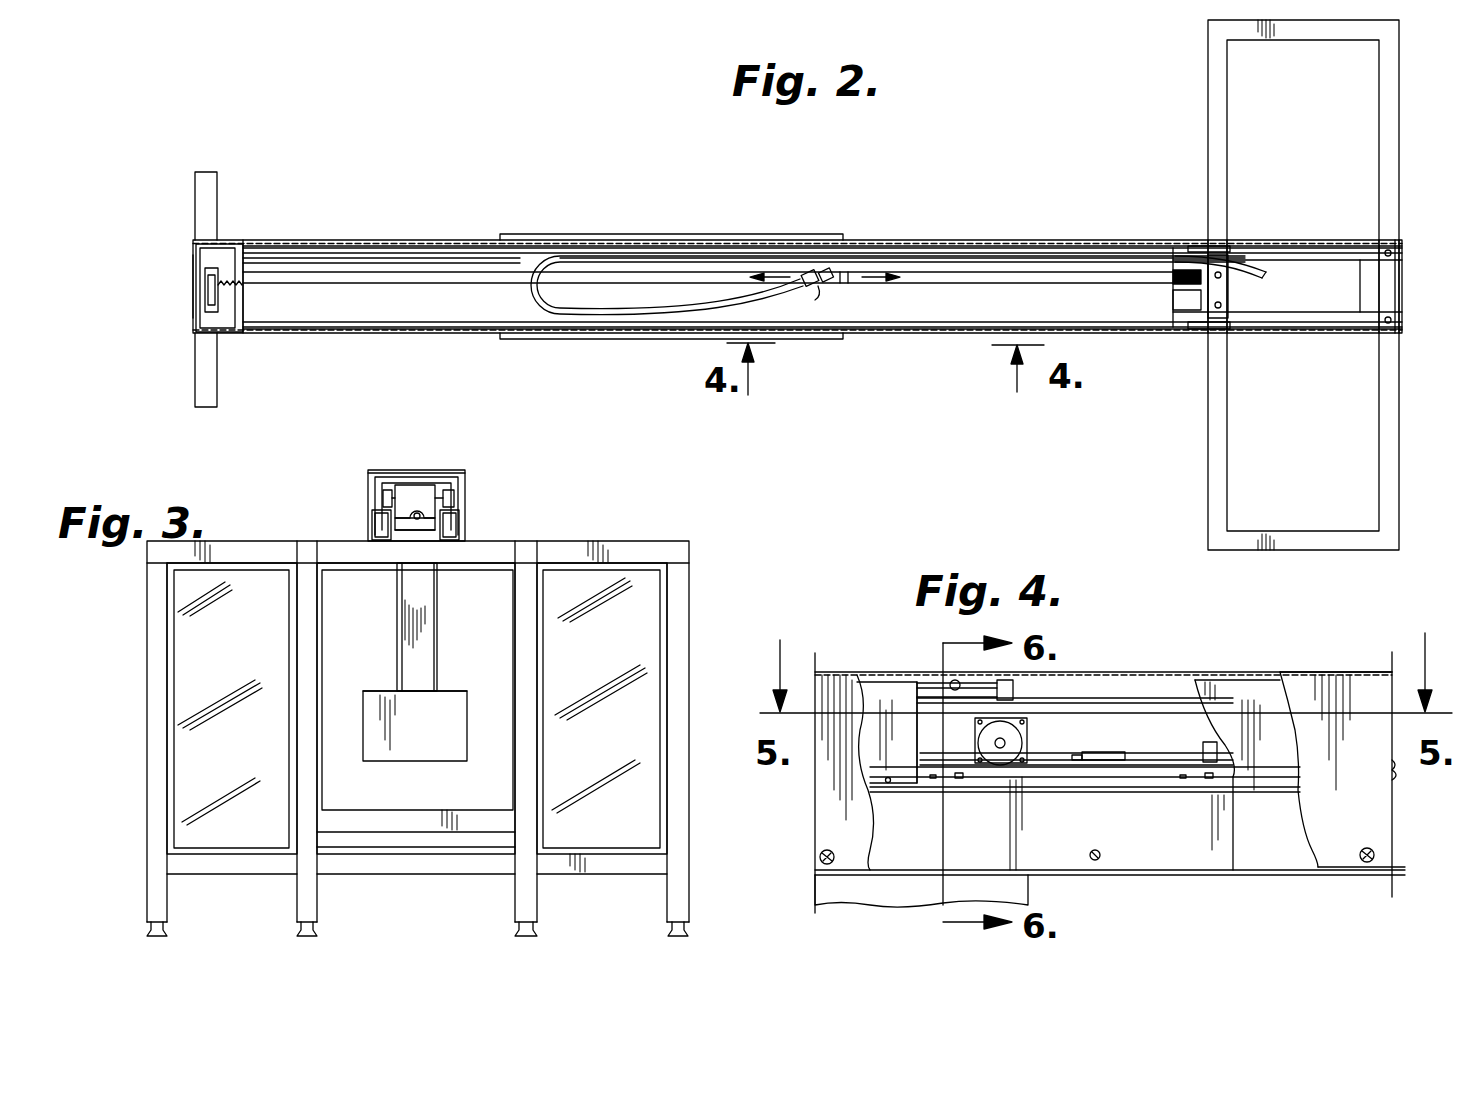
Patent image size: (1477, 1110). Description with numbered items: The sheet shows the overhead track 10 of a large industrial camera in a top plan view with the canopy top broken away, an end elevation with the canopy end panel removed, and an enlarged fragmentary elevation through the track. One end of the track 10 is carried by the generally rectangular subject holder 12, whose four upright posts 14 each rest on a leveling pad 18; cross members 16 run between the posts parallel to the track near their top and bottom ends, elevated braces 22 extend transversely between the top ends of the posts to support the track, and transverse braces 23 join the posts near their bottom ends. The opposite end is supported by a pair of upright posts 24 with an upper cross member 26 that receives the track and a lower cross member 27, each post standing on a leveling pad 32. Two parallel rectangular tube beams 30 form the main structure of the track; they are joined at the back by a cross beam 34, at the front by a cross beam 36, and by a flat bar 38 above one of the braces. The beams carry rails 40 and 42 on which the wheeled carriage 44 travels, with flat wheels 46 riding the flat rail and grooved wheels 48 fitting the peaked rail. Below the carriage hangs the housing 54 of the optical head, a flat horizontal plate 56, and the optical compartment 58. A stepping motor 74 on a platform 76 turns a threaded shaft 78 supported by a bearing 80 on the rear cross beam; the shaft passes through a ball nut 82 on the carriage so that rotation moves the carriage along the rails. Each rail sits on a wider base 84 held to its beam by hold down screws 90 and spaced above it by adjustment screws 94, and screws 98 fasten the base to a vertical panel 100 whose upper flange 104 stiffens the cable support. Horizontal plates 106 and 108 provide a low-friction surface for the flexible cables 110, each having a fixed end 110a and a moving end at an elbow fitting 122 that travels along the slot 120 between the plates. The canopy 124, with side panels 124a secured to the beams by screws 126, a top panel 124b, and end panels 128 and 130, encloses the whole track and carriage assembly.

In FIG. 2, the overhead track 10 is at (1078, 200).
In FIG. 3, the overhead track 10 is at (476, 462).
In FIG. 4, the overhead track 10 is at (1135, 655).
In FIG. 2, the subject holder 12 is at (1200, 430).
In FIG. 3, the subject holder 12 is at (689, 591).
In FIG. 3, the upright post 14 is at (147, 665).
In FIG. 2, the cross member 16 is at (1320, 40).
In FIG. 3, the leveling pad 18 is at (170, 936).
In FIG. 2, the elevated brace 22 is at (1214, 398).
In FIG. 3, the elevated brace 22 is at (584, 541).
In FIG. 3, the transverse brace 23 is at (624, 862).
In FIG. 3, the upright post 24 is at (304, 655).
In FIG. 2, the cross member 26 is at (217, 378).
In FIG. 3, the cross member 26 is at (494, 566).
In FIG. 3, the cross member 27 is at (402, 818).
In FIG. 2, the beam 30 is at (1358, 246).
In FIG. 3, the beam 30 is at (370, 534).
In FIG. 4, the beam 30 is at (1178, 870).
In FIG. 3, the leveling pad 32 is at (299, 934).
In FIG. 2, the cross beam 34 is at (219, 268).
In FIG. 3, the cross beam 34 is at (403, 540).
In FIG. 2, the cross beam 36 is at (1396, 276).
In FIG. 2, the flat bar 38 is at (1222, 296).
In FIG. 2, the rail 40 is at (1196, 246).
In FIG. 3, the rail 40 is at (375, 521).
In FIG. 2, the rail 42 is at (1196, 330).
In FIG. 3, the rail 42 is at (456, 521).
In FIG. 4, the rail 42 is at (1035, 790).
In FIG. 2, the carriage 44 is at (707, 283).
In FIG. 3, the carriage 44 is at (402, 485).
In FIG. 4, the carriage 44 is at (930, 728).
In FIG. 3, the wheel 46 is at (382, 498).
In FIG. 3, the grooved wheel 48 is at (456, 497).
In FIG. 4, the grooved wheel 48 is at (1003, 765).
In FIG. 3, the housing 54 is at (437, 632).
In FIG. 3, the plate 56 is at (455, 690).
In FIG. 3, the optical compartment 58 is at (469, 727).
In FIG. 2, the stepping motor 74 is at (1180, 298).
In FIG. 2, the platform 76 is at (1185, 308).
In FIG. 2, the threaded shaft 78 is at (244, 290).
In FIG. 4, the threaded shaft 78 is at (1155, 765).
In FIG. 2, the bearing 80 is at (205, 288).
In FIG. 3, the bearing 80 is at (415, 540).
In FIG. 4, the ball nut 82 is at (1085, 760).
In FIG. 4, the base 84 is at (1135, 785).
In FIG. 4, the hold down screw 90 is at (960, 772).
In FIG. 4, the adjustment screw 94 is at (940, 787).
In FIG. 4, the screw 98 is at (888, 784).
In FIG. 4, the vertical panel 100 is at (1282, 770).
In FIG. 4, the flange 104 is at (1222, 680).
In FIG. 2, the plate 106 is at (440, 258).
In FIG. 2, the plate 108 is at (966, 333).
In FIG. 4, the plate 108 is at (1108, 702).
In FIG. 2, the flexible cable 110 is at (632, 294).
In FIG. 4, the flexible cable 110 is at (927, 683).
In FIG. 2, the fixed end 110a is at (1245, 266).
In FIG. 2, the slot 120 is at (443, 280).
In FIG. 2, the elbow fitting 122 is at (822, 290).
In FIG. 4, the elbow fitting 122 is at (1015, 690).
In FIG. 3, the canopy 124 is at (416, 470).
In FIG. 4, the canopy 124 is at (1308, 675).
In FIG. 2, the side panel 124a is at (345, 240).
In FIG. 3, the side panel 124a is at (370, 482).
In FIG. 4, the side panel 124a is at (1385, 810).
In FIG. 3, the top panel 124b is at (428, 470).
In FIG. 4, the screw 126 is at (820, 857).
In FIG. 2, the end panel 128 is at (193, 300).
In FIG. 2, the end panel 130 is at (1402, 306).